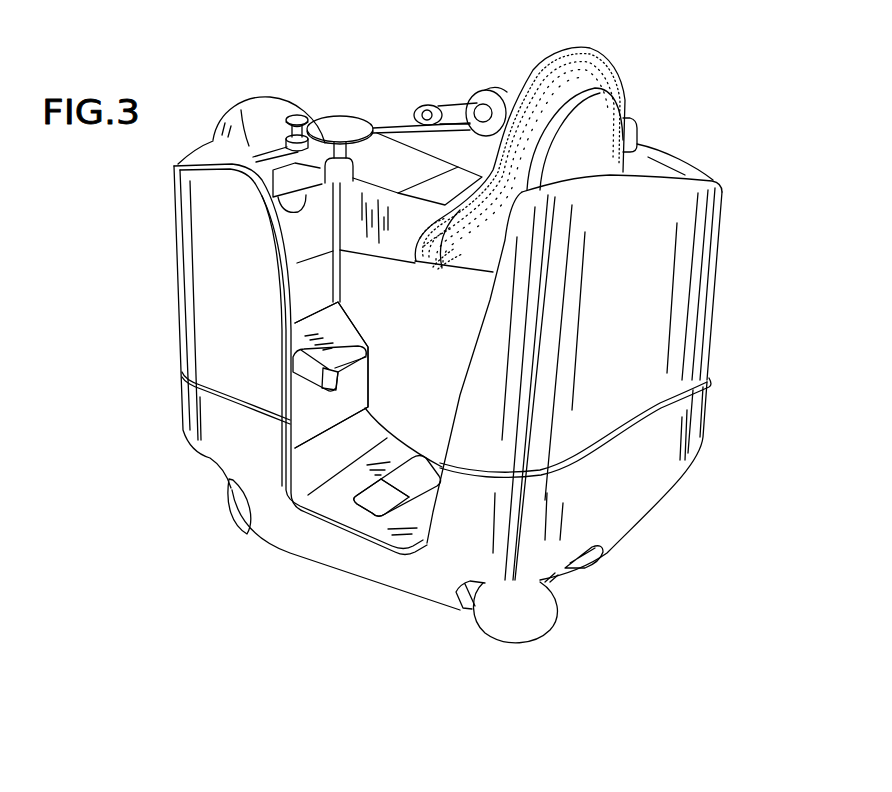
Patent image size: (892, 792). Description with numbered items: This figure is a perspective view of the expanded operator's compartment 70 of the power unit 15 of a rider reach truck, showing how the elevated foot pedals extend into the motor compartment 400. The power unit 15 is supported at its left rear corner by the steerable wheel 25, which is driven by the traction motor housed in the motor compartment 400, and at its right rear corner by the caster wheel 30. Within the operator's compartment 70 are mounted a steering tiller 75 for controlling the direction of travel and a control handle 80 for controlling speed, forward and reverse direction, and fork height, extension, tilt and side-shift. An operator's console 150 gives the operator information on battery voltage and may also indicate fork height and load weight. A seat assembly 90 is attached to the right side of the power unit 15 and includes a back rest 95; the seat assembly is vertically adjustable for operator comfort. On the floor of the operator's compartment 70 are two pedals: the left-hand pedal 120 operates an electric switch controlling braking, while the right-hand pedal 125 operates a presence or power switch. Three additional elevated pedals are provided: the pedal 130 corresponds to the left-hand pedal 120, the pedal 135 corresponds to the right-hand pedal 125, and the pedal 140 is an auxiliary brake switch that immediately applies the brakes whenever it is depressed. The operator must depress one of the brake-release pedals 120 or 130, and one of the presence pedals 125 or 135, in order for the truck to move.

The power unit 15 is at (722, 309).
The steerable wheel 25 is at (227, 510).
The caster wheel 30 is at (547, 620).
The operator's compartment 70 is at (445, 436).
The steering tiller 75 is at (340, 128).
The control handle 80 is at (455, 110).
The seat assembly 90 is at (615, 49).
The back rest 95 is at (626, 86).
The left-hand pedal 120 is at (383, 502).
The right-hand pedal 125 is at (436, 480).
The pedal 130 is at (301, 378).
The pedal 135 is at (328, 342).
The pedal 140 is at (348, 353).
The operator's console 150 is at (248, 108).
The motor compartment 400 is at (228, 283).